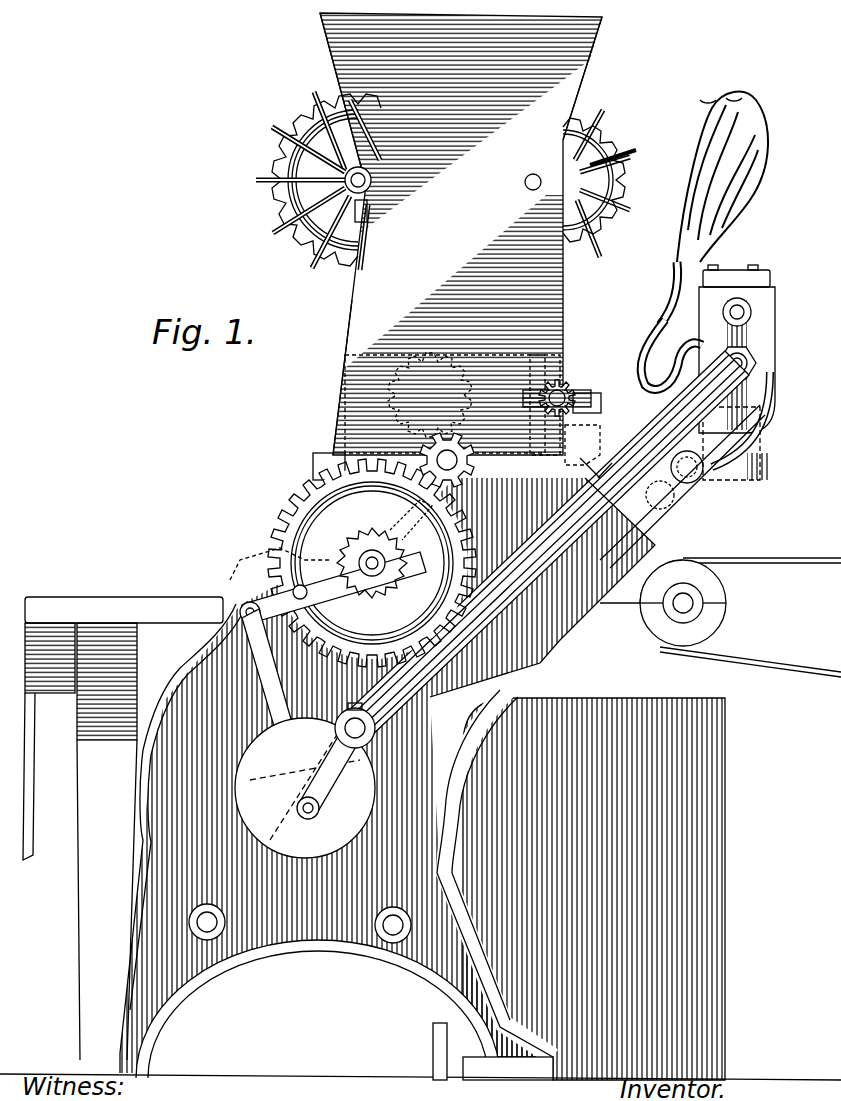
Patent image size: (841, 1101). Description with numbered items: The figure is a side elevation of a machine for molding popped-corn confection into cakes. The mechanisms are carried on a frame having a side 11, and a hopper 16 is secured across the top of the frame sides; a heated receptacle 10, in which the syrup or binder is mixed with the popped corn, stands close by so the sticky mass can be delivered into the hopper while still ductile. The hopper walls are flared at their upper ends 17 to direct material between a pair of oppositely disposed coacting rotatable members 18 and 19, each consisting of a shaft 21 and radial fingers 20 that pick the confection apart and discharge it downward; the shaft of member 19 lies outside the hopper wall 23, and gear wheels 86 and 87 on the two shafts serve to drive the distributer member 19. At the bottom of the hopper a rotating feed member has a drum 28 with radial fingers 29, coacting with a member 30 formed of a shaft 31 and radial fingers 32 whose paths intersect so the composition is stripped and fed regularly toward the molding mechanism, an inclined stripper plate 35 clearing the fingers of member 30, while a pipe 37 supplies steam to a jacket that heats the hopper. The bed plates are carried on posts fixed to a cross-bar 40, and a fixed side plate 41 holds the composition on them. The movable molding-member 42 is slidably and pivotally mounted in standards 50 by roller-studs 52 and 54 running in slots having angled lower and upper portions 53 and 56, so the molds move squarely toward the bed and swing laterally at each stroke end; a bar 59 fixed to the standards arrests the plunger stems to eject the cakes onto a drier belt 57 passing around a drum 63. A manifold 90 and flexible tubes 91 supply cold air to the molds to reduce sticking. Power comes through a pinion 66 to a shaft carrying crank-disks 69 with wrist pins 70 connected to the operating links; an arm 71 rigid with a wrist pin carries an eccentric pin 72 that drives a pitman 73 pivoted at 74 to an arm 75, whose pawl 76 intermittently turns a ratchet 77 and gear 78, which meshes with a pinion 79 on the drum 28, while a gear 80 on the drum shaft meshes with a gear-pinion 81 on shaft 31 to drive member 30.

The heated receptacle 10 is at (32, 800).
The frame side 11 is at (278, 952).
The hopper 16 is at (461, 234).
The flared upper end 17 is at (328, 46).
The rotatable member 18 is at (606, 135).
The rotatable member 19 is at (280, 150).
The radial fingers 20 is at (258, 186).
The shaft 21 is at (372, 181).
The hopper wall 23 is at (352, 300).
The drum 28 is at (332, 418).
The radial fingers 29 is at (428, 365).
The coacting member 30 is at (565, 385).
The shaft 31 is at (570, 392).
The radial fingers 32 is at (590, 416).
The inclined stripper plate 35 is at (597, 457).
The pipe 37 is at (432, 1058).
The cross-bar 40 is at (722, 866).
The side plate 41 is at (660, 560).
The movable molding-member 42 is at (762, 434).
The standards 50 is at (690, 520).
The roller-studs 52 is at (755, 360).
The lower slot portion 53 is at (700, 480).
The roller-studs 54 is at (752, 311).
The upper slot portion 56 is at (748, 397).
The drier belt 57 is at (766, 556).
The bar 59 is at (770, 276).
The drum 63 is at (727, 604).
The pinion 66 is at (545, 592).
The crank-disk 69 is at (304, 820).
The wrist pin 70 is at (375, 735).
The arm 71 is at (345, 770).
The pin 72 is at (316, 815).
The pitman 73 is at (282, 735).
The pivot 74 is at (240, 605).
The arm 75 is at (325, 548).
The pawl 76 is at (345, 608).
The ratchet 77 is at (398, 588).
The gear 78 is at (290, 515).
The pinion 79 is at (405, 514).
The gear 80 is at (344, 378).
The gear-pinion 81 is at (528, 352).
The gear wheel 86 is at (625, 172).
The gear wheel 87 is at (303, 107).
The manifold 90 is at (742, 98).
The flexible tubes 91 is at (700, 222).